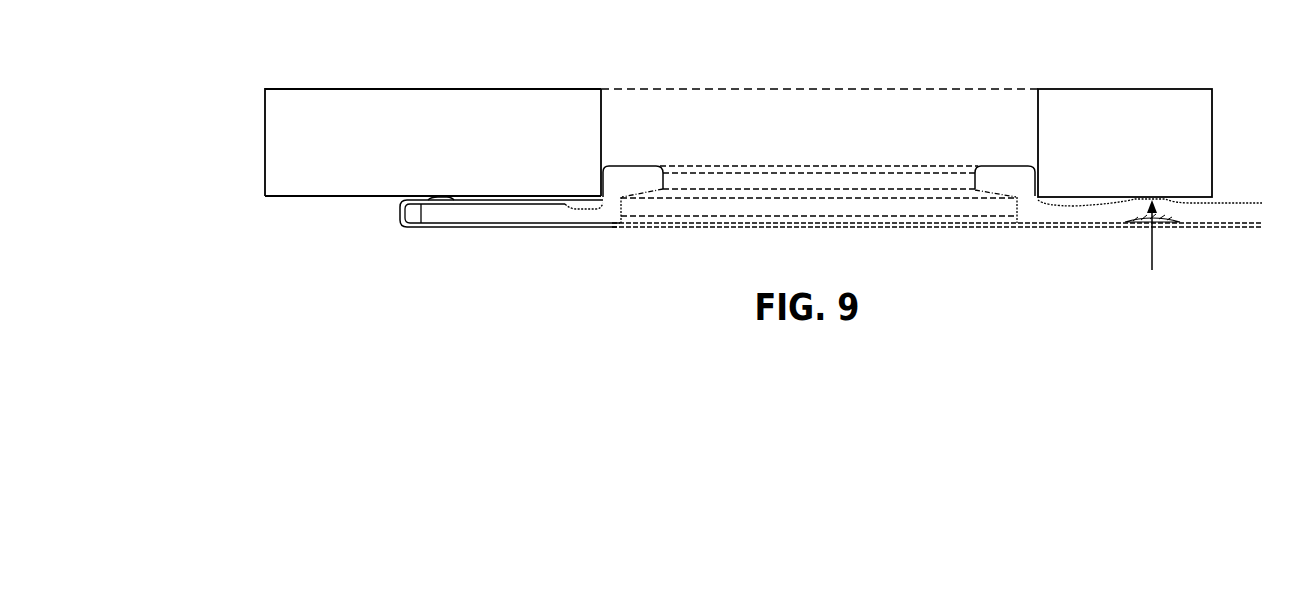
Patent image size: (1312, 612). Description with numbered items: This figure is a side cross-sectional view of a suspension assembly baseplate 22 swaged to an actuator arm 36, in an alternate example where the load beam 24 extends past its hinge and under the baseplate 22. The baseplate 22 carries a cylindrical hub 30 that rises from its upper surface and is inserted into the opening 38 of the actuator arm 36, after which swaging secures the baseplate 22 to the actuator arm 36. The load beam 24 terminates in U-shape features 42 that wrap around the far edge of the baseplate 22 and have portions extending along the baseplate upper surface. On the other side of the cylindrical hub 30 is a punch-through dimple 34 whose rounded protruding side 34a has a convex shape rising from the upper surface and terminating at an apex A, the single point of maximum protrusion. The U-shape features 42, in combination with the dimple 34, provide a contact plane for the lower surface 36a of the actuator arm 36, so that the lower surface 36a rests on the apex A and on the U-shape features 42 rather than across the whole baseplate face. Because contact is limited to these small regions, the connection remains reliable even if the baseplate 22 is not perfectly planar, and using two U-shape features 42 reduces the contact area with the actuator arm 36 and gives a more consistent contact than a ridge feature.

The baseplate 22 is at (944, 169).
The load beam 24 is at (510, 260).
The cylindrical hub 30 is at (825, 129).
The dimple 34 is at (1125, 143).
The protruding side 34a is at (1150, 160).
The actuator arm 36 is at (641, 98).
The lower surface of the actuator arm 36a is at (413, 243).
The opening 38 is at (644, 98).
The U-shape feature 42 is at (417, 158).
The apex A is at (1153, 257).